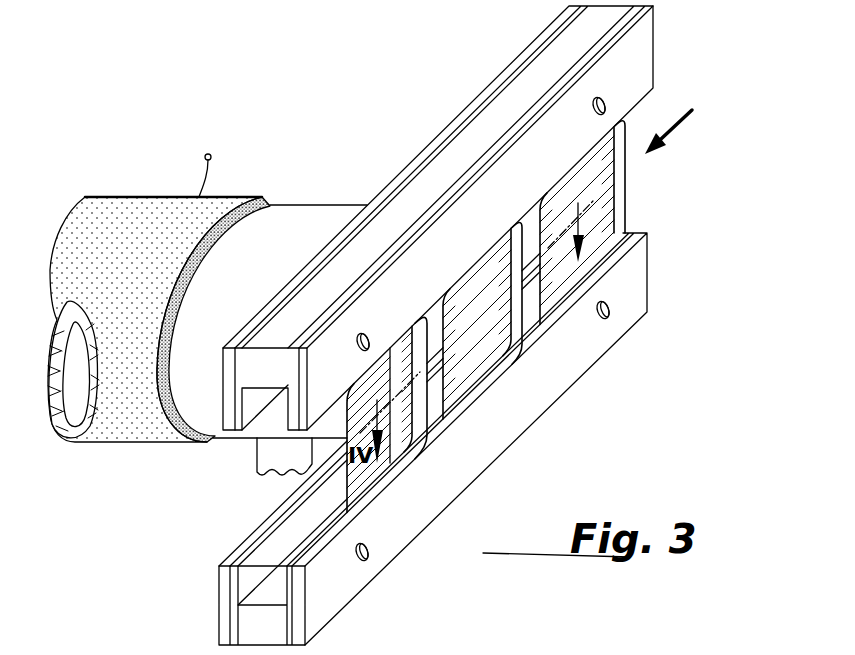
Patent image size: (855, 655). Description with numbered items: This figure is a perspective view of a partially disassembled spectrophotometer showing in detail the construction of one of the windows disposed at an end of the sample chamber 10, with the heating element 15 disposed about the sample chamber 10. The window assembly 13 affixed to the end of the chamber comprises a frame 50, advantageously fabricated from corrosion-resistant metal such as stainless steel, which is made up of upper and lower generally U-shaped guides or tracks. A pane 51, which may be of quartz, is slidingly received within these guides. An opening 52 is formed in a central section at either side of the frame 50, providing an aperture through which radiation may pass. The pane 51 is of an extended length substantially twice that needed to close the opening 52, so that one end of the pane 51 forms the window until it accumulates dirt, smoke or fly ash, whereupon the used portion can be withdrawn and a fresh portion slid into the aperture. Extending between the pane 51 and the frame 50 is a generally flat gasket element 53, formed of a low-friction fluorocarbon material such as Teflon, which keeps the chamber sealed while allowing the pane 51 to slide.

The sample chamber 10 is at (292, 205).
The window assembly 13 is at (657, 52).
The heating element 15 is at (124, 197).
The frame 50 is at (598, 7).
The pane 51 is at (617, 206).
The opening 52 is at (480, 277).
The gasket element 53 is at (288, 528).